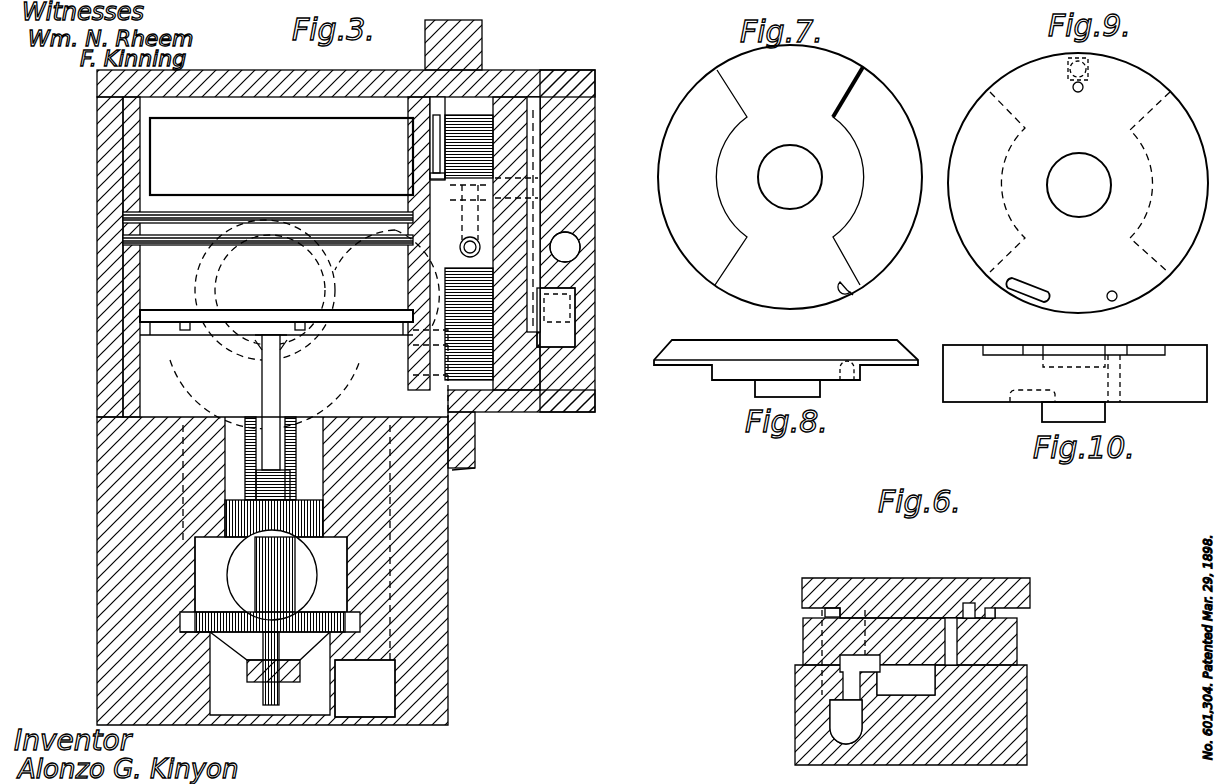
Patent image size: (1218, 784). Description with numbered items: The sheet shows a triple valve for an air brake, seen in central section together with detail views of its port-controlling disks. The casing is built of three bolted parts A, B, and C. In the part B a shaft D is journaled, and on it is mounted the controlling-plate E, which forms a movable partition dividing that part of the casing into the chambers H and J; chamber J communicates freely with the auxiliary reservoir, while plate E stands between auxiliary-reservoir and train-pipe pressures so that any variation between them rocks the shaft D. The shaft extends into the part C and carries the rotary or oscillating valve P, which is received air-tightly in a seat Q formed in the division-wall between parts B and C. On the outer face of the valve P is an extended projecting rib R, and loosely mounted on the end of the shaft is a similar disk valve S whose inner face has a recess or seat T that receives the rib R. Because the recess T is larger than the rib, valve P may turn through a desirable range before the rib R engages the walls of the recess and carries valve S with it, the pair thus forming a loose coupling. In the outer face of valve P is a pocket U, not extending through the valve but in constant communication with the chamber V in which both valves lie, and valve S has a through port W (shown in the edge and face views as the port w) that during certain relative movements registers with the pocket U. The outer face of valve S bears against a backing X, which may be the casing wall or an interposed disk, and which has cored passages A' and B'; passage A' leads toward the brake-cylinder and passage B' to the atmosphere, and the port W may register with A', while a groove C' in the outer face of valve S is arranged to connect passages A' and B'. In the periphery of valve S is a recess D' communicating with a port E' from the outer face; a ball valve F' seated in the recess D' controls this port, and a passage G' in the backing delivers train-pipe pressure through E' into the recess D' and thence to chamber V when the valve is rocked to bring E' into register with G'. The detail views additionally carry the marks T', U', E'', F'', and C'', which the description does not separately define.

In FIG. 3, the casing part A is at (251, 571).
In FIG. 3, the casing part B is at (328, 218).
In FIG. 3, the casing part C is at (566, 231).
In FIG. 3, the shaft D is at (281, 170).
In FIG. 3, the controlling-plate E is at (268, 246).
In FIG. 3, the chamber H is at (240, 98).
In FIG. 3, the chamber J is at (276, 345).
In FIG. 3, the rotary valve P is at (418, 172).
In FIG. 7, the rotary valve P is at (702, 90).
In FIG. 8, the rotary valve P is at (706, 346).
In FIG. 3, the seat Q is at (432, 160).
In FIG. 3, the projecting rib R is at (469, 247).
In FIG. 7, the projecting rib R is at (852, 74).
In FIG. 8, the projecting rib R is at (718, 372).
In FIG. 6, the projecting rib R is at (840, 618).
In FIG. 3, the disk valve S is at (470, 125).
In FIG. 9, the disk valve S is at (1180, 126).
In FIG. 10, the disk valve S is at (1188, 358).
In FIG. 6, the disk valve S is at (1018, 645).
In FIG. 9, the recess or seat T is at (1072, 157).
In FIG. 10, the recess or seat T is at (1078, 339).
In FIG. 6, the recess or seat T is at (1012, 578).
In FIG. 7, the pocket or passage U is at (860, 296).
In FIG. 8, the pocket or passage U is at (858, 389).
In FIG. 6, the pocket or passage U is at (960, 578).
In FIG. 3, the chamber V is at (437, 100).
In FIG. 3, the port or passage W is at (532, 177).
In FIG. 6, the backing X is at (1018, 718).
In FIG. 9, the port or passage w is at (1112, 302).
In FIG. 10, the port or passage w is at (1115, 402).
In FIG. 6, the port or passage w is at (948, 618).
In FIG. 3, the passage A' is at (584, 317).
In FIG. 6, the passage A' is at (906, 680).
In FIG. 3, the passage B' is at (590, 246).
In FIG. 6, the passage B' is at (807, 722).
In FIG. 3, the groove or recess C' is at (304, 324).
In FIG. 9, the groove or recess C' is at (1005, 297).
In FIG. 6, the groove or recess C' is at (861, 619).
In FIG. 9, the recess D' is at (1119, 37).
In FIG. 9, the passage or port E' is at (1102, 79).
In FIG. 3, the ball valve F' is at (455, 221).
In FIG. 3, the passage G' is at (479, 484).
In FIG. 3, the vertical wall plate T' is at (401, 243).
In FIG. 3, the dashed passage U' is at (470, 185).
In FIG. 3, the passage E'' is at (532, 197).
In FIG. 9, the dashed lug F'' is at (1050, 49).
In FIG. 10, the boss C'' is at (1047, 413).